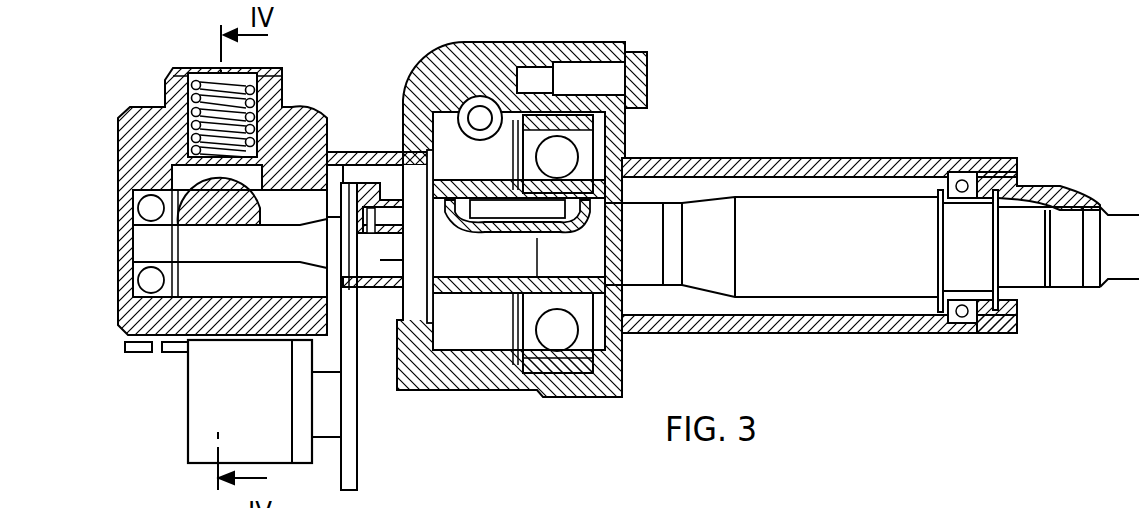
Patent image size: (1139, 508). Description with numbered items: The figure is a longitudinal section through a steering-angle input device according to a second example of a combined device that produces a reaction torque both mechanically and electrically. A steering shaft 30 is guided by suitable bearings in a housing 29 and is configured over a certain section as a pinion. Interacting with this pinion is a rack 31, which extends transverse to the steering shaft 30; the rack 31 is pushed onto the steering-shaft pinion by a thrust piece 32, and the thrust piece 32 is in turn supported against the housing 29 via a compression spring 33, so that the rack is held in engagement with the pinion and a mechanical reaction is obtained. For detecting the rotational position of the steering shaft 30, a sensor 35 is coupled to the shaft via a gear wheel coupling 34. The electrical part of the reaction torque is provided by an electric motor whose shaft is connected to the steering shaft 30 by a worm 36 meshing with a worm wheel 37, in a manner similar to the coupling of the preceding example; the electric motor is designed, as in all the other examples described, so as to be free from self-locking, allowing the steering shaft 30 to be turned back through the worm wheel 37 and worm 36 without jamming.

The housing 29 is at (746, 165).
The steering shaft 30 is at (830, 212).
The rack 31 is at (300, 177).
The thrust piece 32 is at (247, 205).
The compression spring 33 is at (243, 106).
The gear wheel coupling 34 is at (350, 340).
The sensor 35 is at (200, 417).
The worm 36 is at (465, 112).
The worm wheel 37 is at (470, 153).